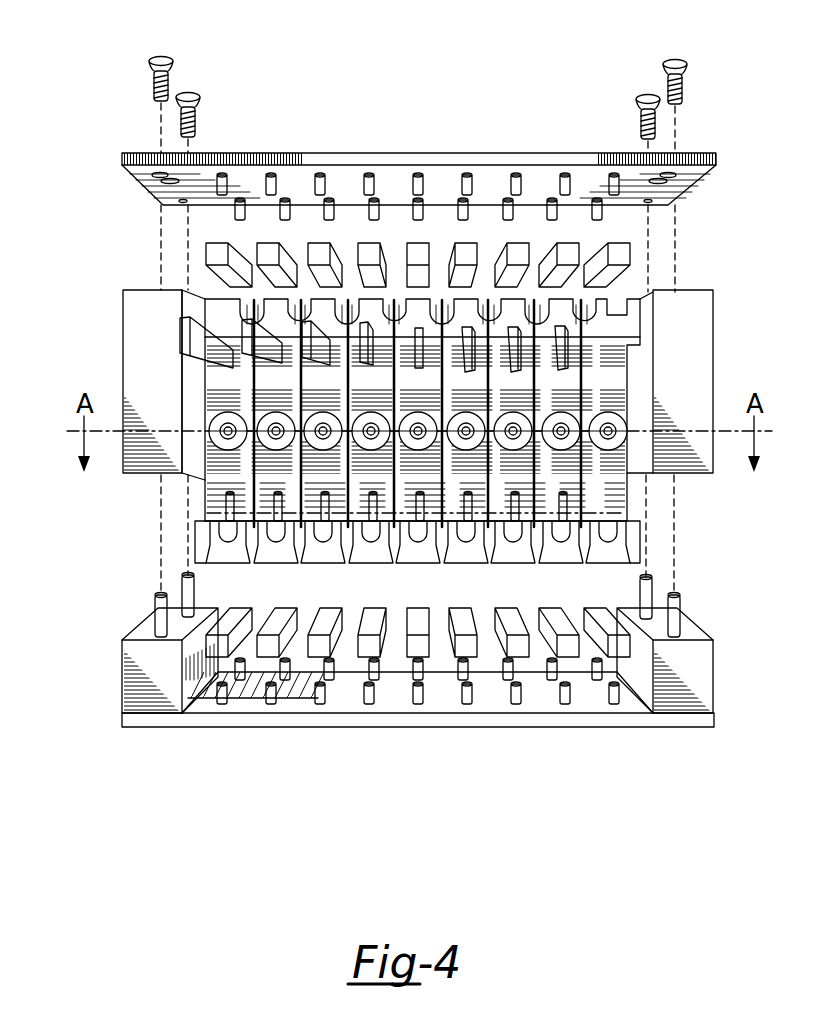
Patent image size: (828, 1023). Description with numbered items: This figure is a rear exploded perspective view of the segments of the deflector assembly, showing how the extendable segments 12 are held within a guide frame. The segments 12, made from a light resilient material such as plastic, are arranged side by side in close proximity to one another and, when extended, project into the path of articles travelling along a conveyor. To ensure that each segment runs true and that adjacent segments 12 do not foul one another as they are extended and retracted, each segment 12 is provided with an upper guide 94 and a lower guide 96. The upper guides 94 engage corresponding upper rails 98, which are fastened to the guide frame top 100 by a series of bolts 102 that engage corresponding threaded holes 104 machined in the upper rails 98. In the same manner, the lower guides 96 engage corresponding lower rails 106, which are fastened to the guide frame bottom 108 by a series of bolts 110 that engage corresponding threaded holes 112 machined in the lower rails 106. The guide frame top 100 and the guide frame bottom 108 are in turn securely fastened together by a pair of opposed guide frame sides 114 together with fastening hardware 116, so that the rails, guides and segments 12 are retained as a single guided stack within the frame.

The extendable segment 12 is at (608, 392).
The upper guide 94 is at (612, 316).
The lower guide 96 is at (560, 558).
The upper rail 98 is at (372, 248).
The guide frame top 100 is at (566, 162).
The bolt 102 is at (466, 216).
The threaded hole 104 is at (318, 288).
The lower rail 106 is at (272, 648).
The guide frame bottom 108 is at (148, 722).
The bolt 110 is at (286, 681).
The threaded hole 112 is at (283, 612).
The guide frame side 114 is at (122, 344).
The fastening hardware 116 is at (182, 110).